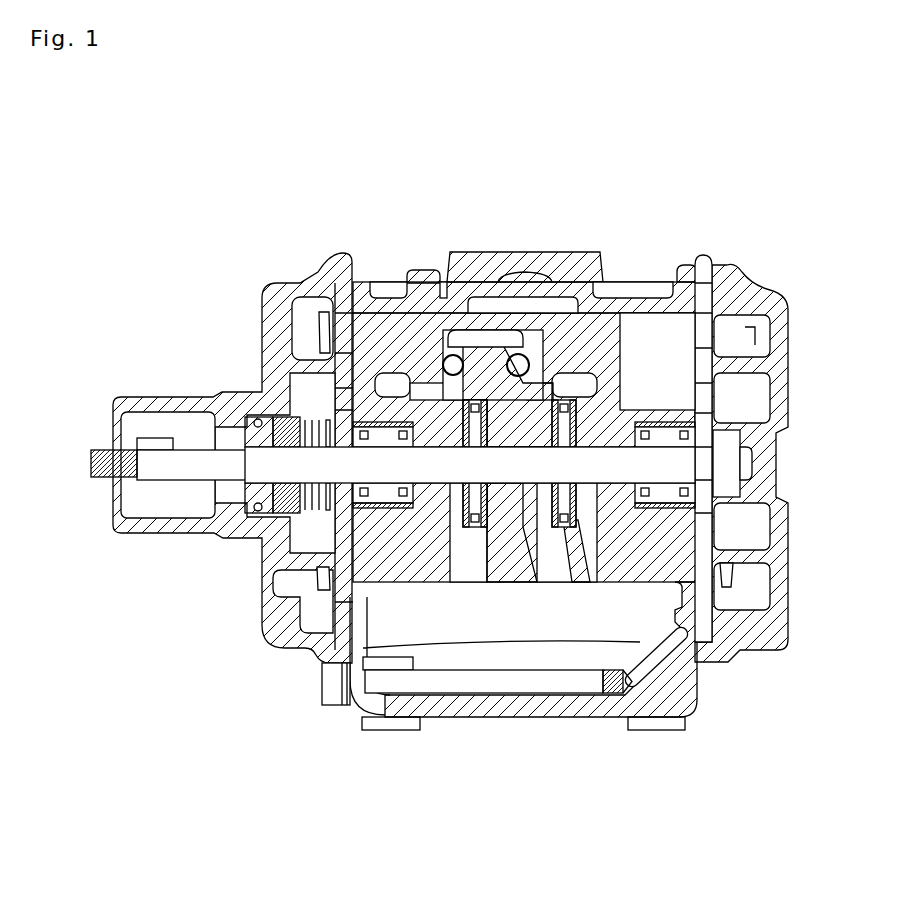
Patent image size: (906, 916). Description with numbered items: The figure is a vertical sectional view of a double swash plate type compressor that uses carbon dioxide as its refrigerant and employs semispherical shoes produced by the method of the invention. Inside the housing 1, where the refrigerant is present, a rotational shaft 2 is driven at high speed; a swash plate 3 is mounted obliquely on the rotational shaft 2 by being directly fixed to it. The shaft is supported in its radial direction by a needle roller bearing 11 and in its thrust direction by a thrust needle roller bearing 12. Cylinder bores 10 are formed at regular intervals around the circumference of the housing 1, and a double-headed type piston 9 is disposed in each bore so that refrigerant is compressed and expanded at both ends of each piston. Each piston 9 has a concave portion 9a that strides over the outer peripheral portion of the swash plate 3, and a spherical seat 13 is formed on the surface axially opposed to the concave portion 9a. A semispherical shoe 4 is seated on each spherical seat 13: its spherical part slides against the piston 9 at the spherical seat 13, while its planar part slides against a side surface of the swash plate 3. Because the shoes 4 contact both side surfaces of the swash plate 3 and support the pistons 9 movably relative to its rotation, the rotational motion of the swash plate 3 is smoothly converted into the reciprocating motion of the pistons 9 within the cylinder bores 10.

The housing 1 is at (621, 312).
The rotational shaft 2 is at (193, 460).
The swash plate 3 is at (519, 567).
The semispherical shoe 4 is at (442, 332).
The double-headed type piston 9 is at (392, 335).
The concave portion 9a is at (488, 330).
The cylinder bore 10 is at (660, 337).
The needle roller bearing 11 is at (392, 510).
The thrust needle roller bearing 12 is at (477, 510).
The spherical seat 13 is at (456, 345).